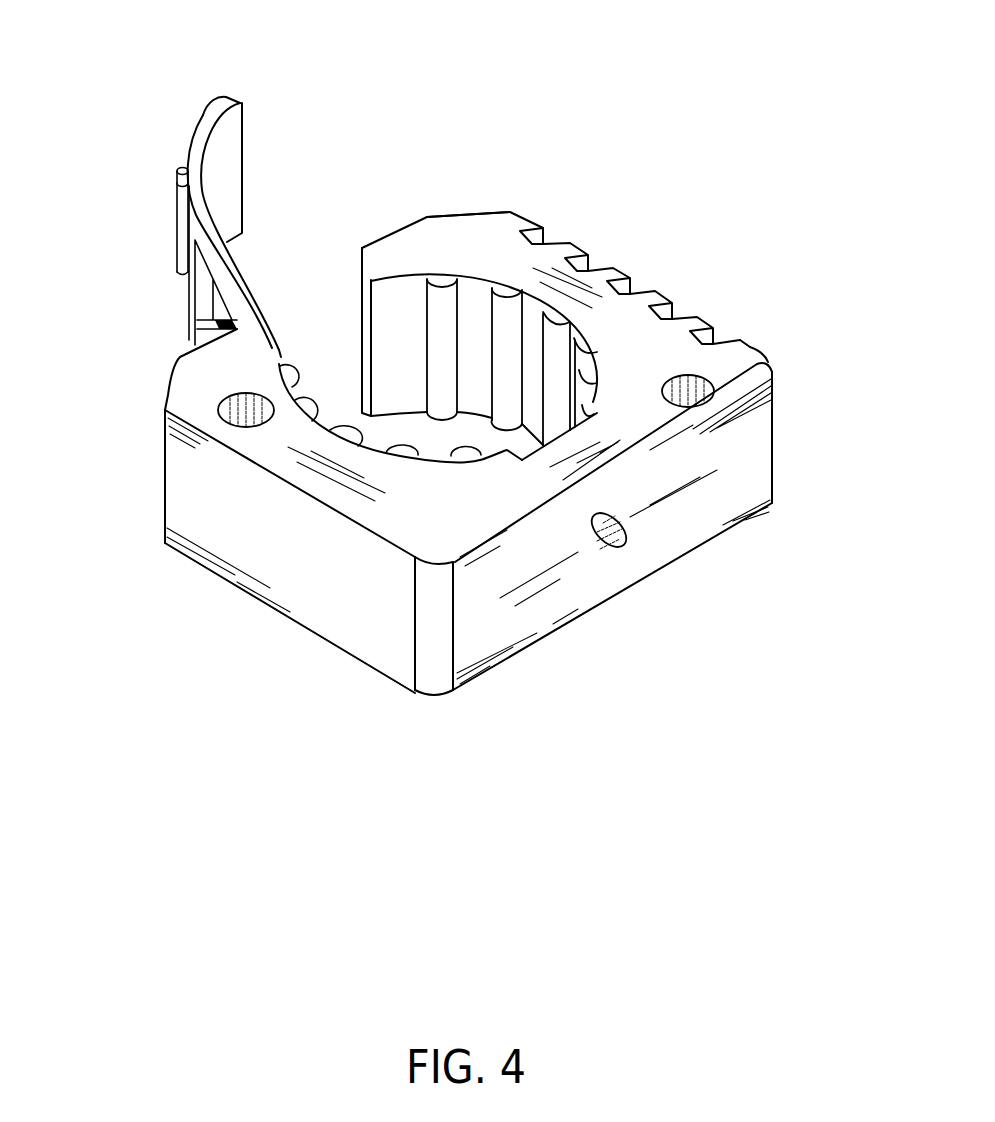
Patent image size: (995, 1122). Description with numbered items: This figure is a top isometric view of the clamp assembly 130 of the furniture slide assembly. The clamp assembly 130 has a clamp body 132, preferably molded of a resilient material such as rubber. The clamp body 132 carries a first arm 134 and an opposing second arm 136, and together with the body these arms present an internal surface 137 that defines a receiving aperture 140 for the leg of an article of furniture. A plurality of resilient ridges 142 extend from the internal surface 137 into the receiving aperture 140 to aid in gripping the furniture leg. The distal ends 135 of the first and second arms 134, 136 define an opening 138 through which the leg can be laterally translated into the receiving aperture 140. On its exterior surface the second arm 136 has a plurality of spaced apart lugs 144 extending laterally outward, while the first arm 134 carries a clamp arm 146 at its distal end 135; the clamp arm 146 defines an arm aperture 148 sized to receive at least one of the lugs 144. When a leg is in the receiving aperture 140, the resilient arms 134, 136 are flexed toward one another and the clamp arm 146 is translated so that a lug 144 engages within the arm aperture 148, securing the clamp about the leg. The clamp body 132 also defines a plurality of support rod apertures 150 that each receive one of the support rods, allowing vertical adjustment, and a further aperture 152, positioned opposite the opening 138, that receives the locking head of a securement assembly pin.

The clamp assembly 130 is at (749, 279).
The clamp body 132 is at (193, 565).
The first arm 134 is at (323, 503).
The distal ends 135 is at (428, 218).
The second arm 136 is at (537, 220).
The internal surface 137 is at (477, 307).
The opening 138 is at (312, 285).
The receiving aperture 140 is at (404, 340).
The resilient ridges 142 is at (518, 328).
The lugs 144 is at (703, 320).
The clamp arm 146 is at (205, 117).
The arm aperture 148 is at (215, 325).
The support rod apertures 150 is at (717, 390).
The aperture 152 is at (611, 549).